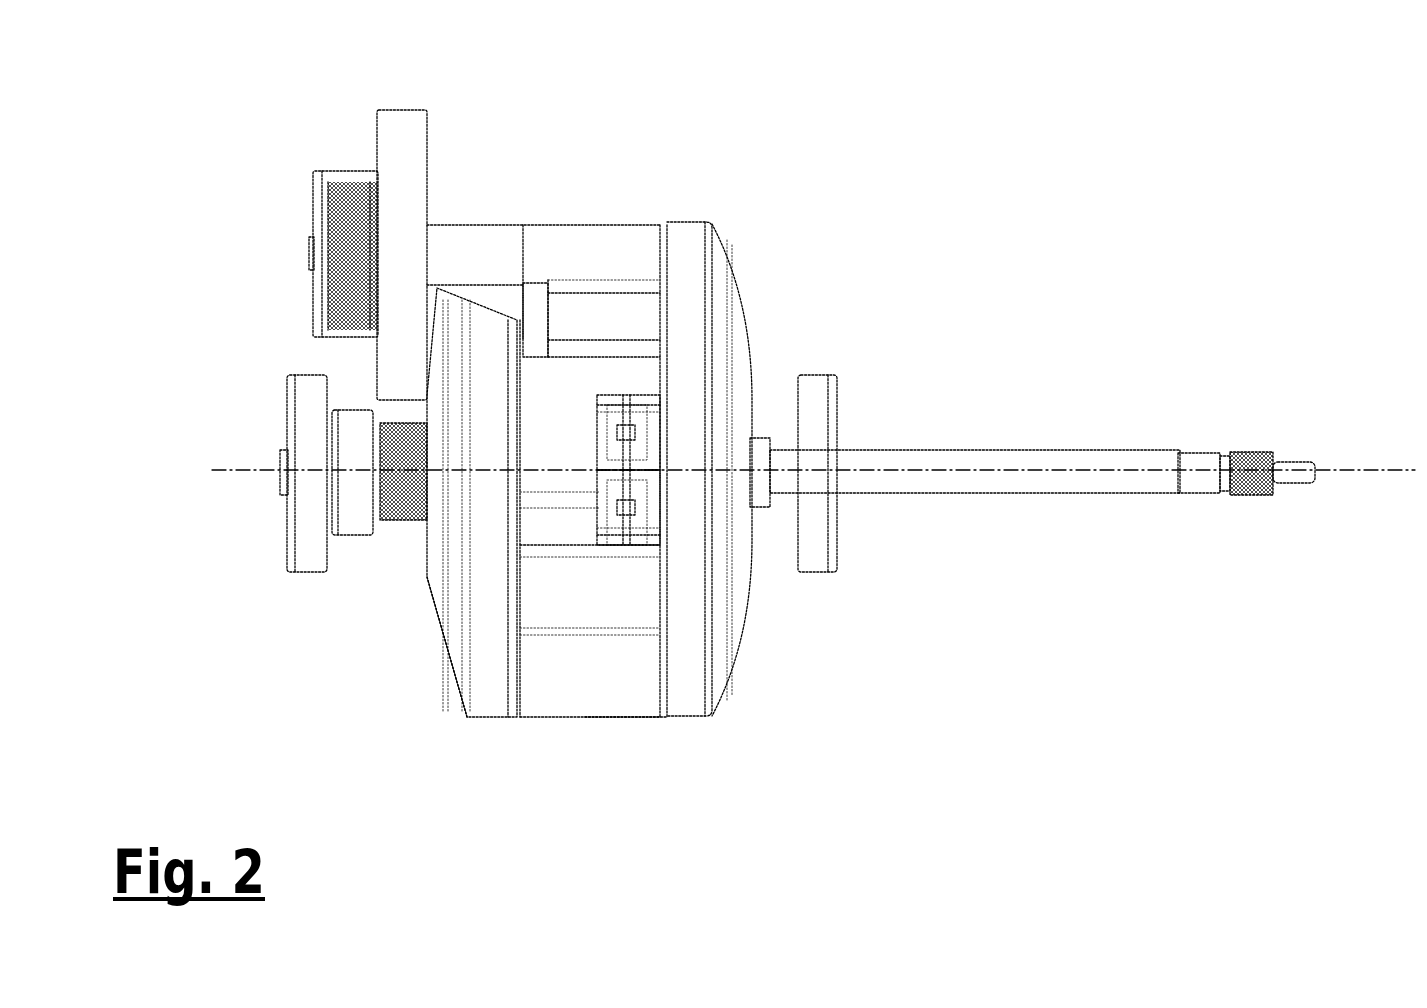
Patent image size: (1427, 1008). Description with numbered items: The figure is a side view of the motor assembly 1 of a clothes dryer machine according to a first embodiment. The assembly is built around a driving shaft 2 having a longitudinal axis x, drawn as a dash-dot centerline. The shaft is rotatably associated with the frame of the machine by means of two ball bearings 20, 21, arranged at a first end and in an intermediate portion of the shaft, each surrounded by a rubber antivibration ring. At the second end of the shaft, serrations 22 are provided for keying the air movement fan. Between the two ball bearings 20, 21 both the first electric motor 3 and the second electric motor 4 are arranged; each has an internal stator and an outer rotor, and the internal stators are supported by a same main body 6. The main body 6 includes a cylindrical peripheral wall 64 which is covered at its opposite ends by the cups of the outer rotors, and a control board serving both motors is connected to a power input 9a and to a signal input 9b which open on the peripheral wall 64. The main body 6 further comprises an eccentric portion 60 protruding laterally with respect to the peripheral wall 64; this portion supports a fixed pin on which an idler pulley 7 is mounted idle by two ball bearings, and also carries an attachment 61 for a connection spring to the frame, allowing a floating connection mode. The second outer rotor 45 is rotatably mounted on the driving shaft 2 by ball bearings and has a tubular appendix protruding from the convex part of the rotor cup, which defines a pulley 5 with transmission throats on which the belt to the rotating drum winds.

The motor assembly 1 is at (847, 195).
The driving shaft 2 is at (915, 466).
The first electric motor 3 is at (700, 740).
The second electric motor 4 is at (500, 740).
The pulley 5 is at (399, 496).
The main body 6 is at (578, 628).
The idler pulley 7 is at (368, 192).
The power input 9a is at (608, 447).
The signal input 9b is at (617, 513).
The ball bearing 20 is at (292, 486).
The ball bearing 21 is at (835, 508).
The serrations 22 is at (1254, 485).
The second outer rotor 45 is at (473, 692).
The eccentric portion 60 is at (645, 242).
The attachment 61 is at (537, 322).
The cylindrical peripheral wall 64 is at (610, 705).
The longitudinal axis x is at (1410, 466).